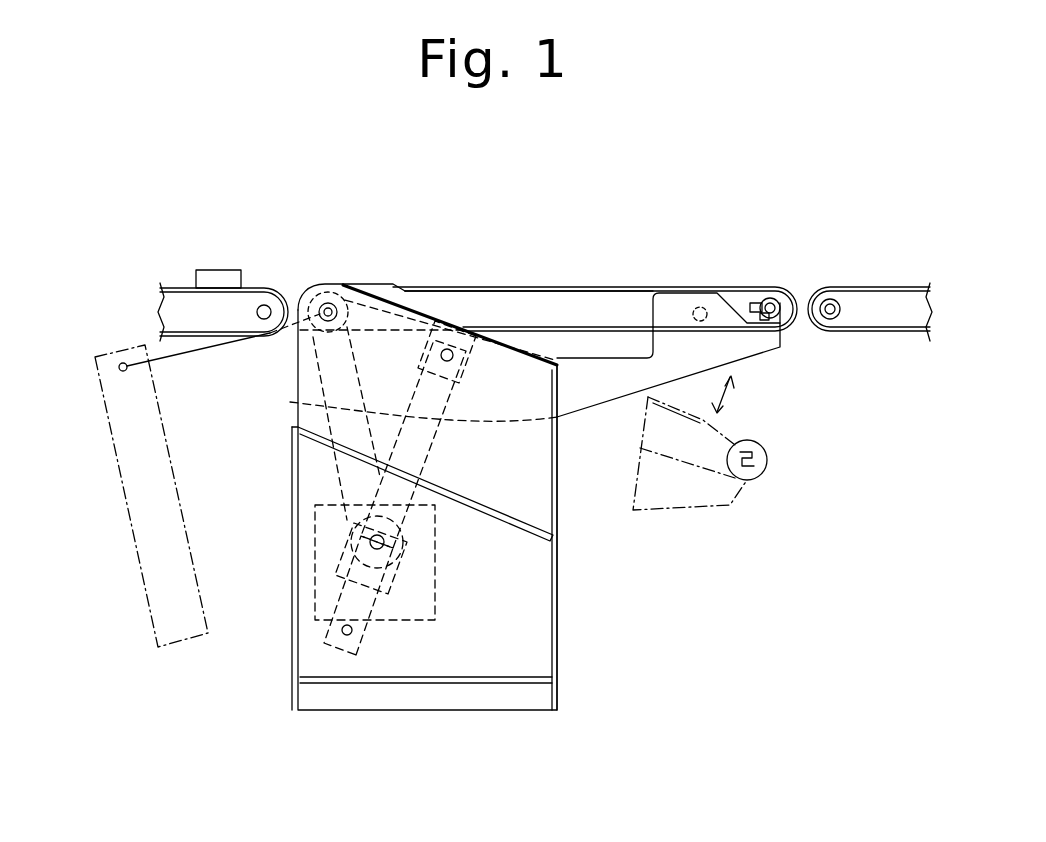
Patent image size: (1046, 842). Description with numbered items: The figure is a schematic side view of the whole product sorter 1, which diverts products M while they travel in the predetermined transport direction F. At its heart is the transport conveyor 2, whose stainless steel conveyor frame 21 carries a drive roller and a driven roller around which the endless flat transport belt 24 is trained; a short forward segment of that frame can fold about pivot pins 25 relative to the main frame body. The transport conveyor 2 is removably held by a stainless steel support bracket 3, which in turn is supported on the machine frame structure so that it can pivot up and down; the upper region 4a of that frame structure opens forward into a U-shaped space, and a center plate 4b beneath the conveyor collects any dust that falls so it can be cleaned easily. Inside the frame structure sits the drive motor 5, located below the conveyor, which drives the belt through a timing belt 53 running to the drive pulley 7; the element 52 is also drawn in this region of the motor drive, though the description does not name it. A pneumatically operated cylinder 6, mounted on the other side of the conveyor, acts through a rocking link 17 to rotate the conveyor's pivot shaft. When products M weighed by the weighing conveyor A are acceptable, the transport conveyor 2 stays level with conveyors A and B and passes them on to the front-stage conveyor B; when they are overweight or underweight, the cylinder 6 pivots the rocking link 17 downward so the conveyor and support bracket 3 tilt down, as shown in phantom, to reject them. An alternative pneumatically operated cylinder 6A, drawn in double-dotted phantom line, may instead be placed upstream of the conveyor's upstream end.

The product sorter 1 is at (337, 266).
The transport conveyor 2 is at (565, 284).
The support bracket 3 is at (723, 357).
The upper region of the machine frame structure 4a is at (543, 492).
The center plate 4b is at (560, 522).
The drive motor 5 is at (335, 548).
The pneumatically operated cylinder 6 is at (423, 449).
The pneumatically operated cylinder 6A is at (147, 597).
The drive pulley 7 is at (318, 332).
The rocking link 17 is at (330, 392).
The conveyor frame 21 is at (527, 299).
The transport belt 24 is at (470, 286).
The pivot pins 25 is at (704, 310).
The swing arm 52 is at (355, 527).
The timing belt 53 is at (340, 405).
The weighing conveyor A is at (180, 288).
The front-stage conveyor B is at (883, 287).
The products M is at (219, 270).
The transport direction F is at (686, 256).